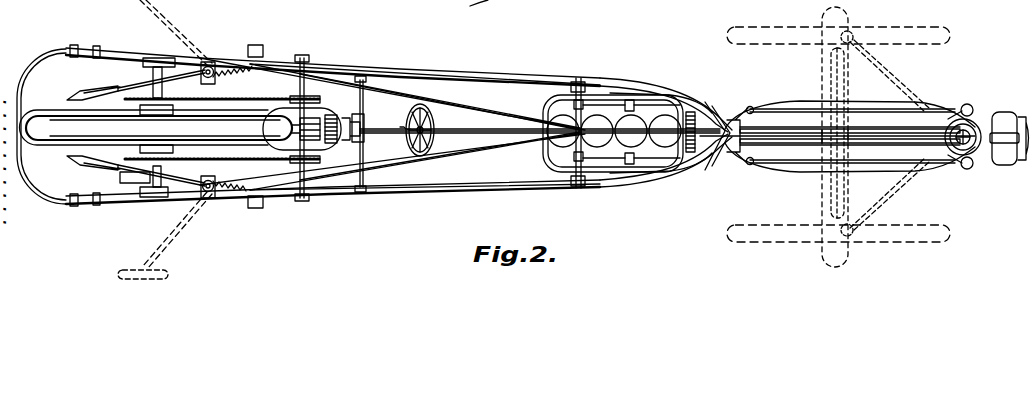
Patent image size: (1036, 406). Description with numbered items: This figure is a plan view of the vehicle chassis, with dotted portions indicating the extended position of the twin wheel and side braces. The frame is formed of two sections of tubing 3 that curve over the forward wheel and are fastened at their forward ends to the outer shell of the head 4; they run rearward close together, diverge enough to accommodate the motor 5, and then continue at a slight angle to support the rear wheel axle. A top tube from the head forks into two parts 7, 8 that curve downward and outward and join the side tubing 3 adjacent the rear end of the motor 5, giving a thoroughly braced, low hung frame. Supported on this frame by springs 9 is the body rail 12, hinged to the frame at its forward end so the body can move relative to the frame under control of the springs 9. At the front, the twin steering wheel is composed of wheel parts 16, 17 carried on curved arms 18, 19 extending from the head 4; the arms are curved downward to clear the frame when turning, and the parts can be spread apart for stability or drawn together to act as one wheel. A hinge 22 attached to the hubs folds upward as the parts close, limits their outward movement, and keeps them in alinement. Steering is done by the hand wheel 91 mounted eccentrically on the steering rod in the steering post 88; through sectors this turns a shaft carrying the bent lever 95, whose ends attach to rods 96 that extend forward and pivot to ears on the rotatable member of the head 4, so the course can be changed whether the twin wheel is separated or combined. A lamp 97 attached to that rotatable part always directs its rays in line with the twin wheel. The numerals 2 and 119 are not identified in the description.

The hull 2 is at (26, 79).
The tubing sections 3 is at (854, 126).
The head 4 is at (973, 113).
The motor 5 is at (661, 152).
The fork part 7 is at (678, 85).
The fork part 8 is at (684, 180).
The springs 9 is at (234, 55).
The body rail 12 is at (460, 76).
The wheel part 16 is at (917, 157).
The wheel part 17 is at (887, 34).
The curved arm 18 is at (888, 196).
The curved arm 19 is at (879, 70).
The hinge 22 is at (828, 197).
The steering post 88 is at (480, 136).
The hand wheel 91 is at (420, 112).
The bent lever 95 is at (747, 107).
The rods 96 is at (776, 108).
The lamp 97 is at (1003, 166).
The brace wires 119 is at (482, 150).